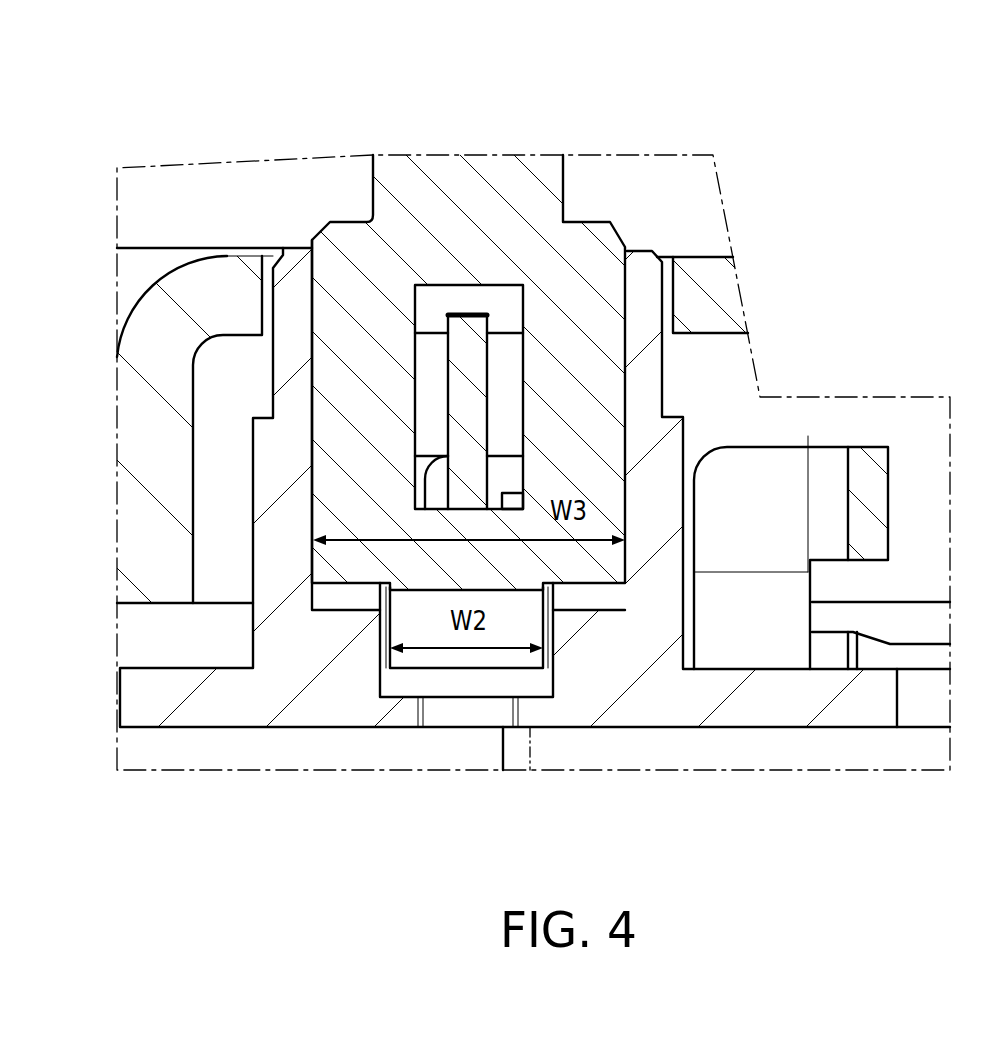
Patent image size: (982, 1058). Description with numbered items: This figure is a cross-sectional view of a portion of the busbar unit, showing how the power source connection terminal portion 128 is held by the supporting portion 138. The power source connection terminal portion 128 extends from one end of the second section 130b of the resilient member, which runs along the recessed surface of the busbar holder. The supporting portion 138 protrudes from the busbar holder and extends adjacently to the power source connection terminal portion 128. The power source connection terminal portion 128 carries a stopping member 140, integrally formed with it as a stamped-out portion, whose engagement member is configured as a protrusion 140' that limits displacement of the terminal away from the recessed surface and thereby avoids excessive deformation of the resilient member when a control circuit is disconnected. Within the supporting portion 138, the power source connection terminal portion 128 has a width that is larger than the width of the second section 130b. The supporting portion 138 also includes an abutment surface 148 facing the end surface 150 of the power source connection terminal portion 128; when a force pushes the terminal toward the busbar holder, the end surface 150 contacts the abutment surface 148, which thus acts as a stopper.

The power source connection terminal portion 128 is at (533, 185).
The supporting portion 138 is at (283, 238).
The stopping member 140 is at (628, 397).
The protrusion 140' is at (653, 412).
The abutment surface 148 is at (330, 622).
The end surface 150 is at (352, 598).
The second section 130b is at (462, 706).